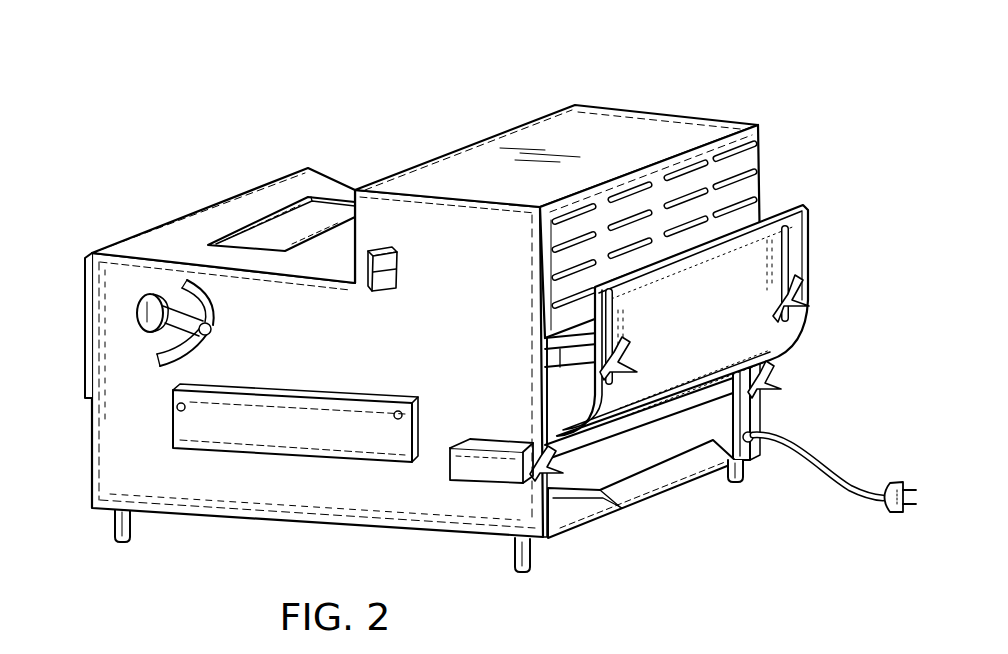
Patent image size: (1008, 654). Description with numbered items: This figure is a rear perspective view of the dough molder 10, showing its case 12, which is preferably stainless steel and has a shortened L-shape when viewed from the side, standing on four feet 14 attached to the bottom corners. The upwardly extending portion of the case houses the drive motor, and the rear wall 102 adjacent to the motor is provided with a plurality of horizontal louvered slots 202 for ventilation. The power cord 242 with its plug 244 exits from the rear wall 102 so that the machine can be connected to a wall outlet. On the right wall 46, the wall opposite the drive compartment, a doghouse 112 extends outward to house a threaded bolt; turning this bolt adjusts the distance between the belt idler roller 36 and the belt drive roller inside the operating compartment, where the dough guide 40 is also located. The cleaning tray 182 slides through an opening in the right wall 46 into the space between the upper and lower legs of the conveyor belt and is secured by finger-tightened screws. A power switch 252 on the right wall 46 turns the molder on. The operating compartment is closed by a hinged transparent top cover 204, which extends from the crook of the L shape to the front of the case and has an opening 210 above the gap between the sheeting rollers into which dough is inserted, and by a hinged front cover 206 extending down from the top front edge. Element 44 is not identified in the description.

The dough molder 10 is at (472, 62).
The case 12 is at (660, 113).
The feet 14 is at (130, 532).
The belt idler roller 36 is at (703, 403).
The dough guide 40 is at (812, 240).
The base plate 44 is at (662, 486).
The right wall 46 is at (474, 246).
The rear wall 102 is at (763, 153).
The doghouse 112 is at (460, 474).
The cleaning tray 182 is at (320, 397).
The louvered slots 202 is at (752, 134).
The top cover 204 is at (165, 240).
The front cover 206 is at (85, 346).
The opening 210 is at (286, 216).
The power cord 242 is at (815, 458).
The plug 244 is at (883, 513).
The power switch 252 is at (383, 295).